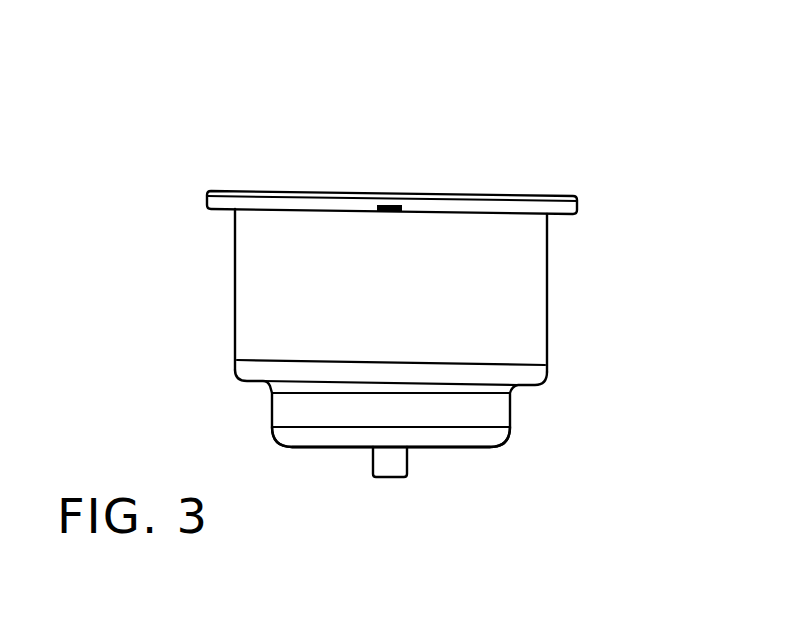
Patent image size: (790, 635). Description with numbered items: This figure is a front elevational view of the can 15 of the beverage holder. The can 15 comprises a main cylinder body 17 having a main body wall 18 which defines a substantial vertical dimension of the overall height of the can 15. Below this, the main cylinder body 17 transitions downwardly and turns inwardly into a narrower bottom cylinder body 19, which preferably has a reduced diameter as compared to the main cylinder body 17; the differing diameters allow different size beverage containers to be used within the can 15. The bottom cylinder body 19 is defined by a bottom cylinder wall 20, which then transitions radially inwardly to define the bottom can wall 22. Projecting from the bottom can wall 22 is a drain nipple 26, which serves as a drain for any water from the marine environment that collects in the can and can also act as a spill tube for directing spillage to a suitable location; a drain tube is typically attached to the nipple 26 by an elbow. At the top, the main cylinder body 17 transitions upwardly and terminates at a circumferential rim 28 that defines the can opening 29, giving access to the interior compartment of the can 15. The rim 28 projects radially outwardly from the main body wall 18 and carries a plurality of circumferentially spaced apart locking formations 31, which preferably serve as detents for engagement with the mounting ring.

The can 15 is at (145, 140).
The main cylinder body 17 is at (260, 283).
The main body wall 18 is at (547, 298).
The bottom cylinder body 19 is at (497, 418).
The bottom cylinder wall 20 is at (465, 417).
The bottom can wall 22 is at (336, 447).
The drain nipple 26 is at (400, 470).
The circumferential rim 28 is at (262, 193).
The can opening 29 is at (473, 193).
The locking formations 31 is at (397, 205).